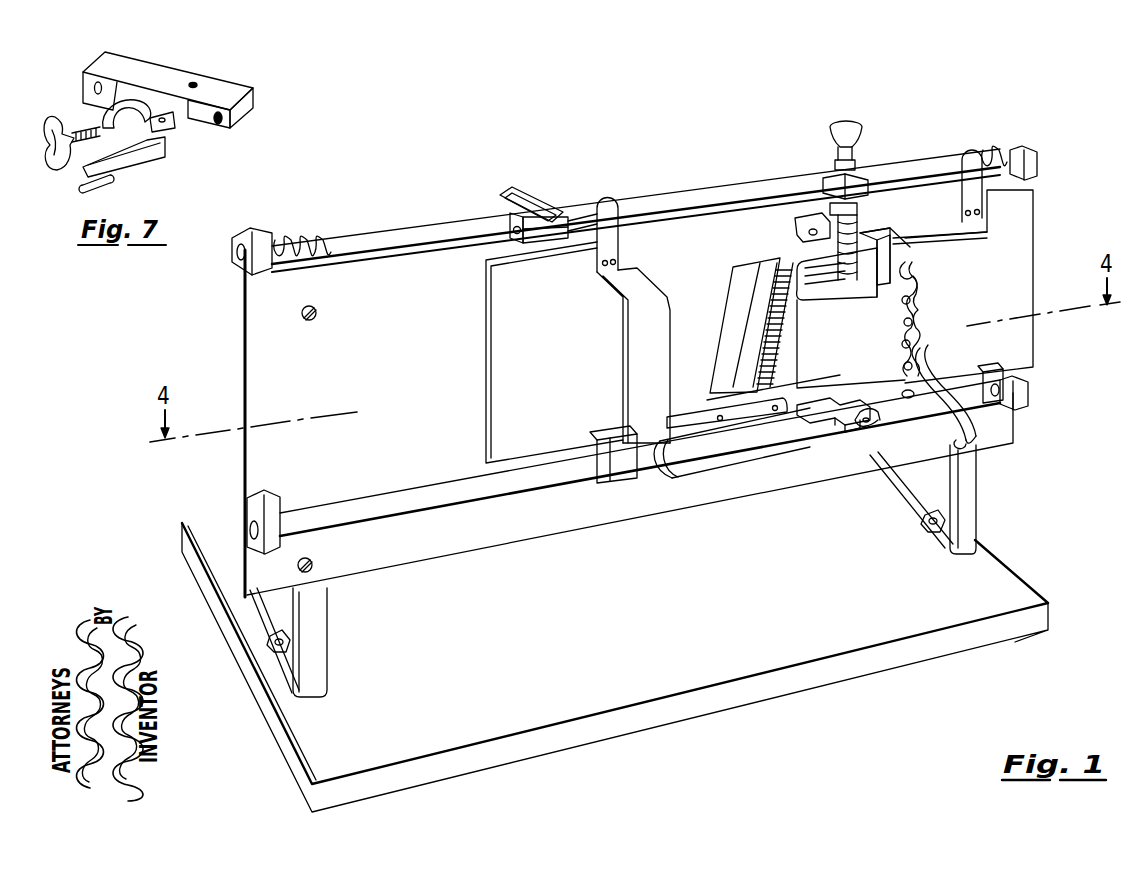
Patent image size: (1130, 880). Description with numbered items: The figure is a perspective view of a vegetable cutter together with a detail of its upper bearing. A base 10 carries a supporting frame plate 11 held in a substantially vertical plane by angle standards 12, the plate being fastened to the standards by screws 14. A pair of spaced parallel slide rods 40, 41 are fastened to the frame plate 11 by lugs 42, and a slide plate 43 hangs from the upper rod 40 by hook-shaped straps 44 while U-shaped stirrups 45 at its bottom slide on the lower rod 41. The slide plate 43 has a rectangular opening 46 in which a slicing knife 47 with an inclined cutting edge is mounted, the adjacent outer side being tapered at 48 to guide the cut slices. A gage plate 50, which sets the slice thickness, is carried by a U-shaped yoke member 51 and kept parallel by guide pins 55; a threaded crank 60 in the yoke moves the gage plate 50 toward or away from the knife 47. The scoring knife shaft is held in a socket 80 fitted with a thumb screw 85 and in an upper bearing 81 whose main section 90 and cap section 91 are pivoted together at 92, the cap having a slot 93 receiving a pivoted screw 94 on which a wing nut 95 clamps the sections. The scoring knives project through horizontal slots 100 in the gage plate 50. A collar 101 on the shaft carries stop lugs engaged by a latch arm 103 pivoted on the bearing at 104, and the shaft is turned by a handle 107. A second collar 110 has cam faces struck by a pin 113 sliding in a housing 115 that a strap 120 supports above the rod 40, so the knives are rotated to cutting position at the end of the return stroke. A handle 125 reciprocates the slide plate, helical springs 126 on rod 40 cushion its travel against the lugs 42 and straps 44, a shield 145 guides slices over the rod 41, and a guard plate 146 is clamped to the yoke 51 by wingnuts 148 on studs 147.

In FIG. 1, the base 10 is at (1035, 622).
In FIG. 1, the supporting frame plate 11 is at (252, 340).
In FIG. 1, the angle standard 12 is at (318, 648).
In FIG. 1, the screw 14 is at (318, 313).
In FIG. 1, the upper slide rod 40 is at (410, 232).
In FIG. 1, the lower slide rod 41 is at (405, 497).
In FIG. 1, the lug 42 is at (252, 230).
In FIG. 1, the slide plate 43 is at (495, 325).
In FIG. 1, the hook-shaped strap 44 is at (607, 203).
In FIG. 1, the stirrup 45 is at (623, 474).
In FIG. 1, the rectangular opening 46 is at (943, 238).
In FIG. 1, the slicing knife 47 is at (757, 307).
In FIG. 1, the tapered portion 48 is at (728, 347).
In FIG. 1, the gage plate 50 is at (978, 342).
In FIG. 1, the yoke member 51 is at (897, 268).
In FIG. 1, the guide pin 55 is at (910, 292).
In FIG. 1, the crank 60 is at (935, 373).
In FIG. 1, the socket 80 is at (837, 418).
In FIG. 7, the bearing 81 is at (247, 108).
In FIG. 1, the bearing 81 is at (797, 220).
In FIG. 1, the thumb screw 85 is at (862, 427).
In FIG. 7, the main section 90 is at (168, 75).
In FIG. 7, the cap section 91 is at (150, 167).
In FIG. 7, the pivot 92 is at (163, 127).
In FIG. 7, the slot 93 is at (110, 183).
In FIG. 7, the screw 94 is at (80, 127).
In FIG. 7, the wing nut 95 is at (65, 178).
In FIG. 1, the wing nut 95 is at (810, 197).
In FIG. 1, the horizontal slot 100 is at (817, 263).
In FIG. 1, the collar 101 is at (822, 195).
In FIG. 1, the latch arm 103 is at (875, 195).
In FIG. 7, the pivot 104 is at (198, 83).
In FIG. 1, the handle 107 is at (848, 123).
In FIG. 1, the collar 110 is at (852, 185).
In FIG. 1, the pin 113 is at (587, 230).
In FIG. 1, the housing member 115 is at (548, 235).
In FIG. 1, the strap 120 is at (523, 193).
In FIG. 1, the handle 125 is at (633, 351).
In FIG. 1, the helical spring 126 is at (307, 235).
In FIG. 1, the shield 145 is at (737, 450).
In FIG. 1, the guard plate 146 is at (820, 367).
In FIG. 1, the stud 147 is at (910, 320).
In FIG. 1, the wingnut 148 is at (910, 323).